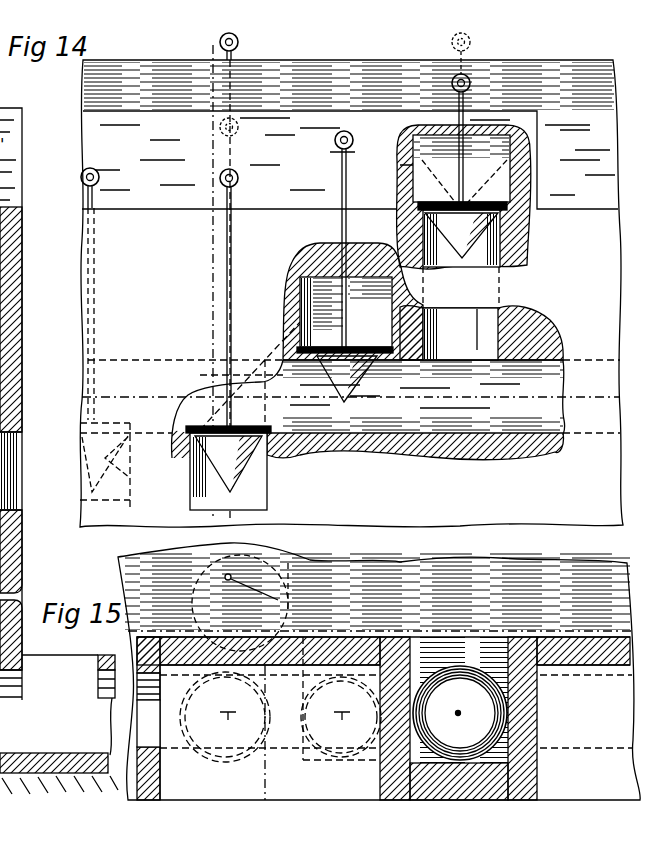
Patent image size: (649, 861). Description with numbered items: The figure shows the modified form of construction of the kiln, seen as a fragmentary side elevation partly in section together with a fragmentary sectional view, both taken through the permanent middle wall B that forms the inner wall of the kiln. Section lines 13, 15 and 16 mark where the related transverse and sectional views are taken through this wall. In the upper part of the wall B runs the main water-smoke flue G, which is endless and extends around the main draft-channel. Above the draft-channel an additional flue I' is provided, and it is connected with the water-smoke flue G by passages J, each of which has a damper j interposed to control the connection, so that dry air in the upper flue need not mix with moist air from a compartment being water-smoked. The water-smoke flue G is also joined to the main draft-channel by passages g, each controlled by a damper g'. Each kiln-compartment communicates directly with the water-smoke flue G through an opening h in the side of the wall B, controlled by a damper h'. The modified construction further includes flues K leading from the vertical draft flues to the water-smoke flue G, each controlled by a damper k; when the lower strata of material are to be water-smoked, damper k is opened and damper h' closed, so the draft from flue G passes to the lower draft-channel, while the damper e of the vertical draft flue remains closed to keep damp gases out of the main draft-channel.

In FIG. 14, the section line 13 13 is at (206, 282).
In FIG. 14, the section line 15 15 is at (79, 178).
In FIG. 14, the section line 16 16 is at (631, 397).
In FIG. 14, the wall B is at (351, 293).
In FIG. 15, the wall B is at (128, 796).
In FIG. 14, the flue I' is at (349, 129).
In FIG. 15, the flue I' is at (380, 591).
In FIG. 14, the passage J is at (25, 247).
In FIG. 15, the passage J is at (459, 700).
In FIG. 14, the damper j is at (468, 232).
In FIG. 14, the passage g is at (209, 315).
In FIG. 14, the damper g' is at (208, 266).
In FIG. 15, the damper g' is at (341, 717).
In FIG. 14, the opening h is at (161, 472).
In FIG. 14, the damper h' is at (239, 264).
In FIG. 15, the damper h' is at (225, 717).
In FIG. 14, the damper k is at (140, 477).
In FIG. 14, the flue K is at (80, 500).
In FIG. 14, the main water-smoke flue G is at (368, 410).
In FIG. 15, the main water-smoke flue G is at (148, 723).
In FIG. 15, the damper e is at (240, 603).